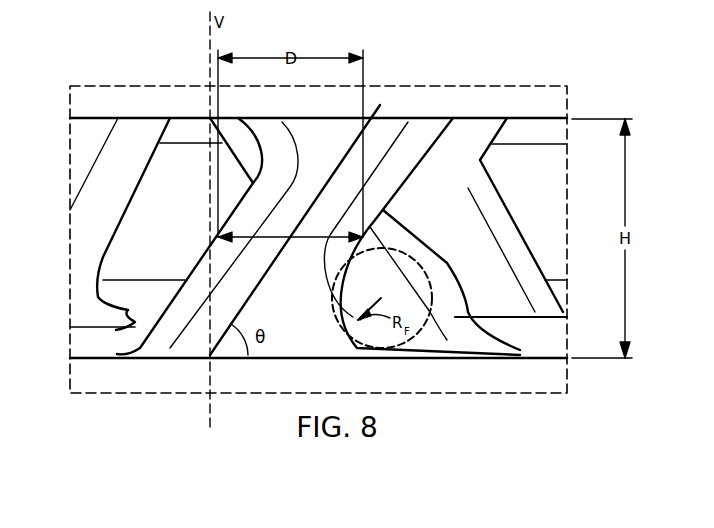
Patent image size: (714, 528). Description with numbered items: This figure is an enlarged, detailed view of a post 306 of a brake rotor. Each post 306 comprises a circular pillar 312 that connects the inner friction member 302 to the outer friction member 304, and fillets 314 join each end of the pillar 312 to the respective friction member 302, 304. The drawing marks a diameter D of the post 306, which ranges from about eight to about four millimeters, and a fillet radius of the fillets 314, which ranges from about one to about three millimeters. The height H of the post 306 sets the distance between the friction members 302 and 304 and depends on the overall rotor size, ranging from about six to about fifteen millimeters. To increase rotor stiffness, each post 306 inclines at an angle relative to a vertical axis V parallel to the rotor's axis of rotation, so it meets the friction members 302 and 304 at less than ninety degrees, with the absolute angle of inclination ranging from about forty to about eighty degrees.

The inner friction member 302 is at (527, 374).
The outer friction member 304 is at (553, 108).
The post 306 is at (417, 134).
The circular pillar 312 is at (223, 261).
The fillet 314 is at (270, 130).